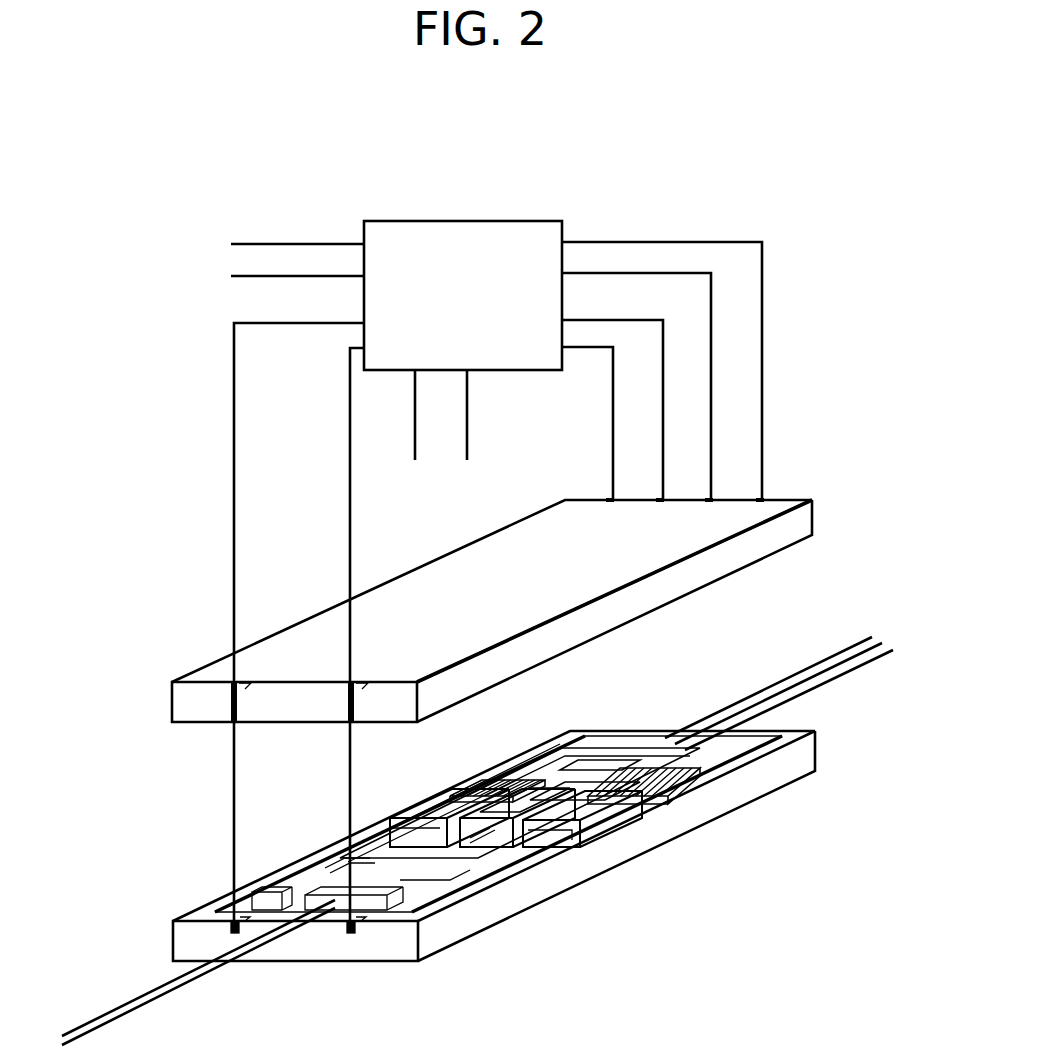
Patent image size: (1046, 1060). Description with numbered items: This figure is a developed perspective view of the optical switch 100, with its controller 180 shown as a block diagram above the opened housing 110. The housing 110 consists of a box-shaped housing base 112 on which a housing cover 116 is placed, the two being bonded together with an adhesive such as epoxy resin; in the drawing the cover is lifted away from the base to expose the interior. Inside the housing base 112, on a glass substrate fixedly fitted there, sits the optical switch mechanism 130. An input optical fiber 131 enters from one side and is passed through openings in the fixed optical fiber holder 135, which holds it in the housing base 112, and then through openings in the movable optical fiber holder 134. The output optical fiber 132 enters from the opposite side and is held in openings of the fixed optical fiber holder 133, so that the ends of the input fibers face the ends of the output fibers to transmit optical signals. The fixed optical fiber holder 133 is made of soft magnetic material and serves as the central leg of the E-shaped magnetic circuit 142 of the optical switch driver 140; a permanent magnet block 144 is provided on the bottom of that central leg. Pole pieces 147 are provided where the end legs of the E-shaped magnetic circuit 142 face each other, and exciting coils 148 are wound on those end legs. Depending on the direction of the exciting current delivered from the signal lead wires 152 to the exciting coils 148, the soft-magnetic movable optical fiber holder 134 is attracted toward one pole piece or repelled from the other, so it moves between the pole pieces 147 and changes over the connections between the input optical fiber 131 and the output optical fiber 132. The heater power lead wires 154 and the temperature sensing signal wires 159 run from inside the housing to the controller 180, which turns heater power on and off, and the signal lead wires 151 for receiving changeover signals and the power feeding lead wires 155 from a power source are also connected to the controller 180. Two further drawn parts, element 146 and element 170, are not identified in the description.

The optical switch 100 is at (627, 985).
The housing 110 is at (546, 611).
The housing base 112 is at (829, 619).
The housing cover 116 is at (753, 550).
The optical switch mechanism 130 is at (610, 805).
The input optical fiber 131 is at (190, 984).
The output optical fiber 132 is at (855, 665).
The fixed optical fiber holder 133 is at (572, 788).
The movable optical fiber holder 134 is at (518, 800).
The fixed optical fiber holder 135 is at (393, 895).
The optical switch driver 140 is at (640, 812).
The E-shaped magnetic circuit 142 is at (707, 747).
The permanent magnet block 144 is at (610, 760).
The optical element 146 is at (442, 802).
The pole pieces 147 is at (420, 837).
The exciting coils 148 is at (477, 762).
The signal lead wires 151 is at (314, 276).
The signal lead wires 152 is at (350, 463).
The heater power lead wires 154 is at (763, 362).
The power feeding lead wires 155 is at (467, 398).
The signal wires 159 is at (613, 432).
The circuit element 170 is at (452, 863).
The controller 180 is at (521, 221).